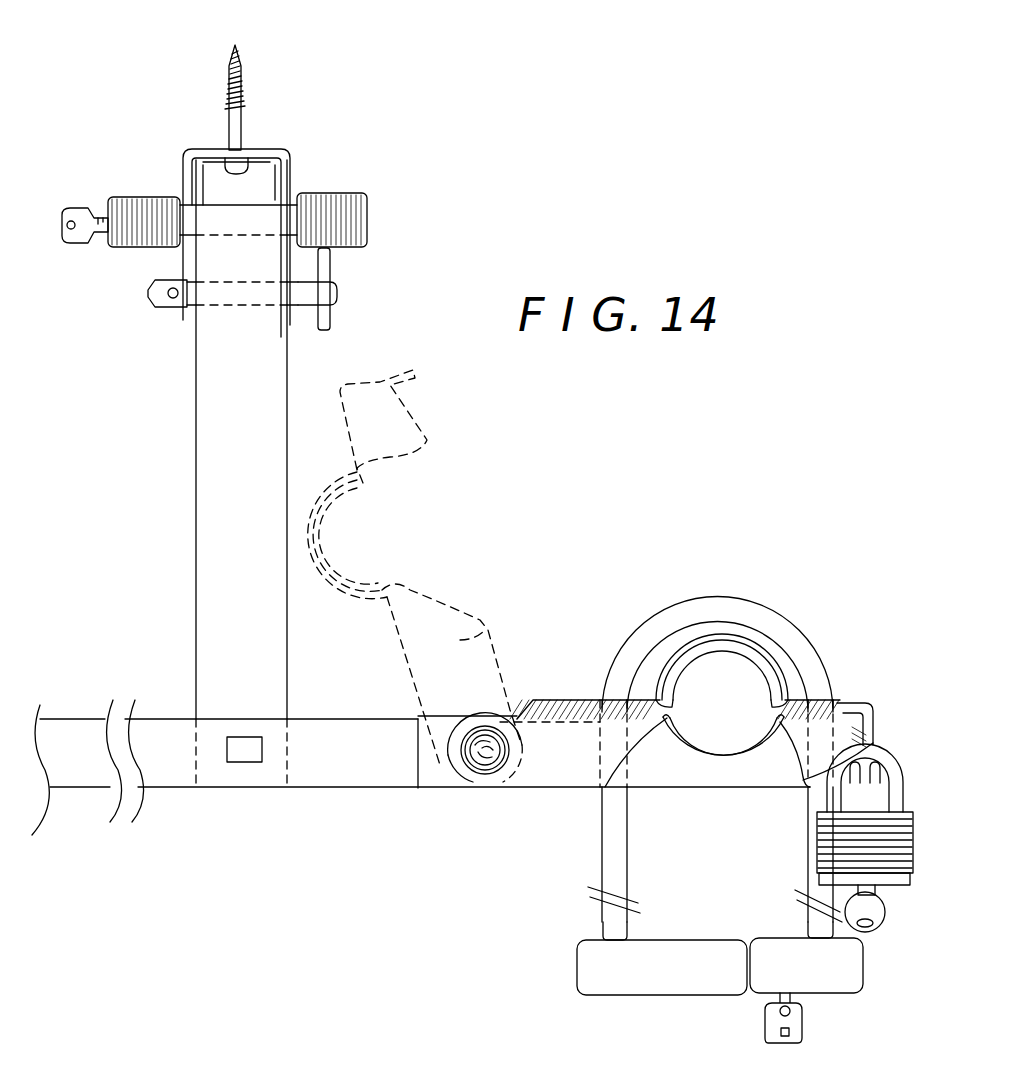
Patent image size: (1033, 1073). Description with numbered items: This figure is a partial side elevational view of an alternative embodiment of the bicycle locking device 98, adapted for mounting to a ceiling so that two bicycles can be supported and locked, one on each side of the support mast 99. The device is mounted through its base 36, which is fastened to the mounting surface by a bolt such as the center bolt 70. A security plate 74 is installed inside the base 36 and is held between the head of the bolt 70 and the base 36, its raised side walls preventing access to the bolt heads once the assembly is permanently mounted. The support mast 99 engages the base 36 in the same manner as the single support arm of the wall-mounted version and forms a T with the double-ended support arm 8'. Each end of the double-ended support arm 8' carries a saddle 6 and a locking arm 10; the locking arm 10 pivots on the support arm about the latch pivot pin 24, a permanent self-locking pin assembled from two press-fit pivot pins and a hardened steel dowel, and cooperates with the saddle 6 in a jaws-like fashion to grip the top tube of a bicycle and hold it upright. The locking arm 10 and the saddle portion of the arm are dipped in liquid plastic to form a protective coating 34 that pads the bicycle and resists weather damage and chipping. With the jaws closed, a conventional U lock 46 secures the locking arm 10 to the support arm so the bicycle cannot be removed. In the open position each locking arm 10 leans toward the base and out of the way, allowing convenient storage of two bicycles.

The center bolt 70 is at (240, 70).
The base 36 is at (183, 165).
The security plate 74 is at (268, 172).
The support mast 99 is at (196, 411).
The bicycle locking device 98 is at (230, 525).
The locking arm 10 is at (492, 632).
The double-ended support arm 8' is at (421, 773).
The coating 34 is at (440, 770).
The latch pivot pin 24 is at (485, 760).
The saddle 6 is at (724, 760).
The "U" lock 46 is at (672, 973).